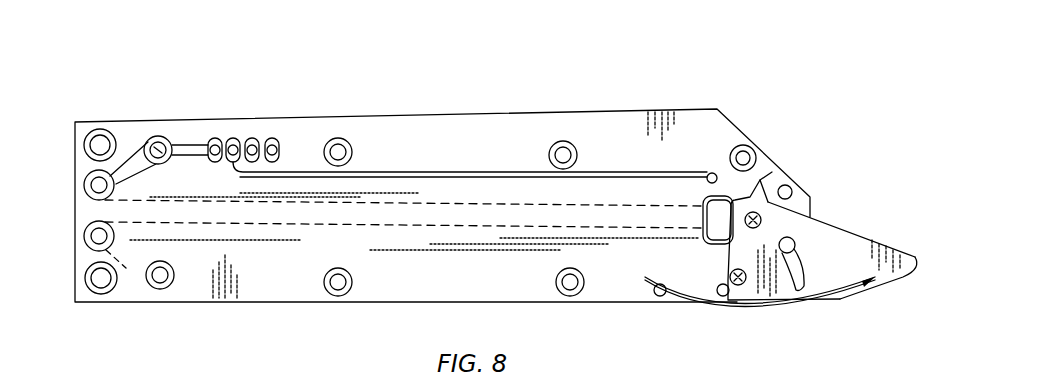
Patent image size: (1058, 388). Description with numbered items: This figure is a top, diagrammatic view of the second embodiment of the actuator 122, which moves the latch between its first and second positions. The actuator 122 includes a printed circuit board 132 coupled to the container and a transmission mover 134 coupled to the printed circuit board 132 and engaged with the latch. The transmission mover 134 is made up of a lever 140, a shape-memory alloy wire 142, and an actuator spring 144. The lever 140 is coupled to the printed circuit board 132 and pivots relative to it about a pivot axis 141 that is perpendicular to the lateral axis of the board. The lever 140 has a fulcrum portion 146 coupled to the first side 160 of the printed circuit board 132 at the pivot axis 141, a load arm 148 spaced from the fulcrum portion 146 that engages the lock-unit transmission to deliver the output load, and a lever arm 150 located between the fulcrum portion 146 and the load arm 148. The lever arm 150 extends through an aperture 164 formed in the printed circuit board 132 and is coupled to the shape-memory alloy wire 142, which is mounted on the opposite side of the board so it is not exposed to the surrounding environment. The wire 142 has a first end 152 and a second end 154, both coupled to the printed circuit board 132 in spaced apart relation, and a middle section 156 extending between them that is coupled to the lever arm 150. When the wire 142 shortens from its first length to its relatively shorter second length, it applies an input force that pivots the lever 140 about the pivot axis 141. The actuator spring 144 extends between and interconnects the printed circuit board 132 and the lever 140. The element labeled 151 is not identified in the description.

The actuator 122 is at (499, 201).
The printed circuit board 132 is at (305, 118).
The transmission mover 134 is at (882, 140).
The lever 140 is at (885, 218).
The pivot axis 141 is at (738, 285).
The shape-memory alloy wire 142 is at (423, 168).
The actuator spring 144 is at (773, 306).
The fulcrum portion 146 is at (722, 271).
The load arm 148 is at (762, 168).
The lever arm 150 is at (858, 217).
The spring end 151 is at (812, 272).
The first end 152 is at (124, 162).
The second end 154 is at (138, 280).
The middle section 156 is at (473, 203).
The first side 160 is at (388, 140).
The aperture 164 is at (738, 170).